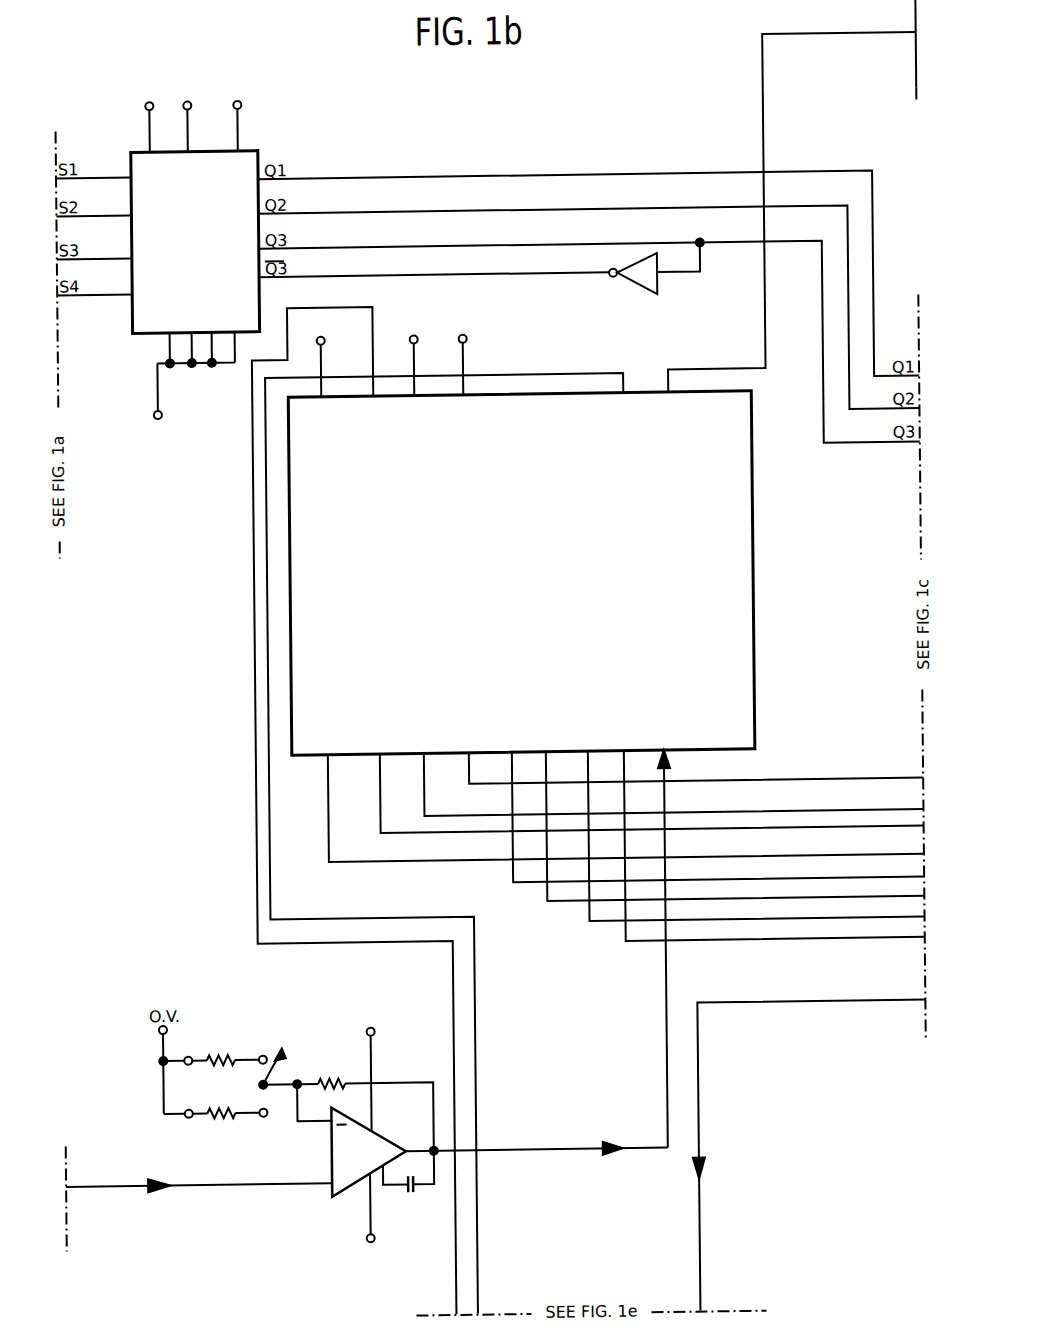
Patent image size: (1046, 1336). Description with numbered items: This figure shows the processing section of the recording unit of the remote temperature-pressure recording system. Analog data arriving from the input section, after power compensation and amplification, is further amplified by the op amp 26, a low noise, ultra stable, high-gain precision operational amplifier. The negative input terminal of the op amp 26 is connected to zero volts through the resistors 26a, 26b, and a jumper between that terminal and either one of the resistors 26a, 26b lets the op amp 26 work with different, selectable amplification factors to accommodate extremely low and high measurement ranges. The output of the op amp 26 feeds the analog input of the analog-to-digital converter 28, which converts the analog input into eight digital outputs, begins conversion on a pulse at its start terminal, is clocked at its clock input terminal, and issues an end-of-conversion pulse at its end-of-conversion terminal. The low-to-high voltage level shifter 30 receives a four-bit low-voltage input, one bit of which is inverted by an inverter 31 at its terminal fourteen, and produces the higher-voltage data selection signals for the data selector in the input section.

The low-to-high voltage level shifter 30 is at (137, 150).
The inverter 31 is at (649, 283).
The analog-to-digital converter (ADC) 28 is at (754, 566).
The op amp 26 is at (367, 1129).
The resistor 26a is at (214, 1052).
The resistor 26b is at (216, 1114).